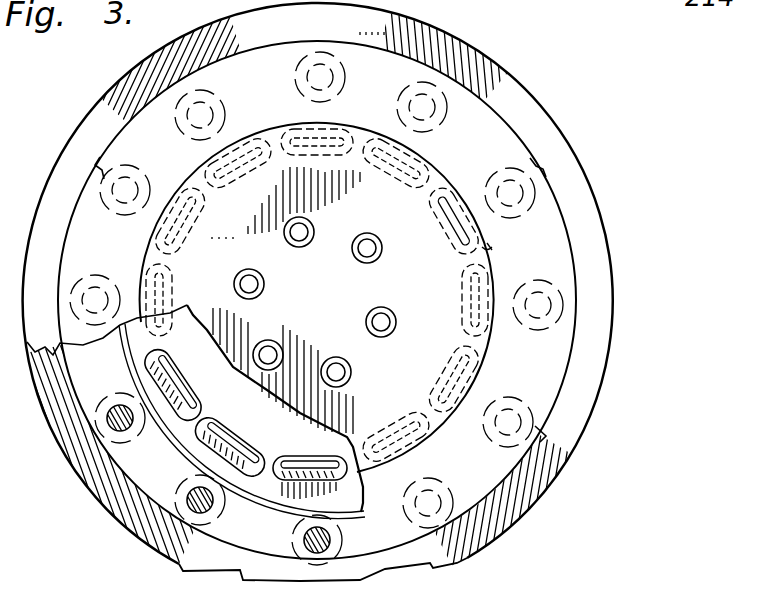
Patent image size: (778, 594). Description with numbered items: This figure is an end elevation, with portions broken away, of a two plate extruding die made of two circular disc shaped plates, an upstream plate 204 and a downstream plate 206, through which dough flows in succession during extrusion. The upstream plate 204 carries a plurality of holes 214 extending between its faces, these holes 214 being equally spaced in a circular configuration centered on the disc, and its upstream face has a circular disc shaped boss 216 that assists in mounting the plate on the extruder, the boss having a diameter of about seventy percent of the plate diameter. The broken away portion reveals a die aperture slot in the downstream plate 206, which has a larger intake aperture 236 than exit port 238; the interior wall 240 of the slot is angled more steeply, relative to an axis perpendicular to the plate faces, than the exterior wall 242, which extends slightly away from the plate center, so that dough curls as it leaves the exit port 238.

The upstream plate 204 is at (556, 362).
The downstream plate 206 is at (213, 407).
The holes 214 is at (368, 321).
The boss 216 is at (489, 264).
The intake aperture 236 is at (443, 183).
The exit port 238 is at (442, 231).
The interior wall 240 is at (487, 250).
The exterior wall 242 is at (490, 248).